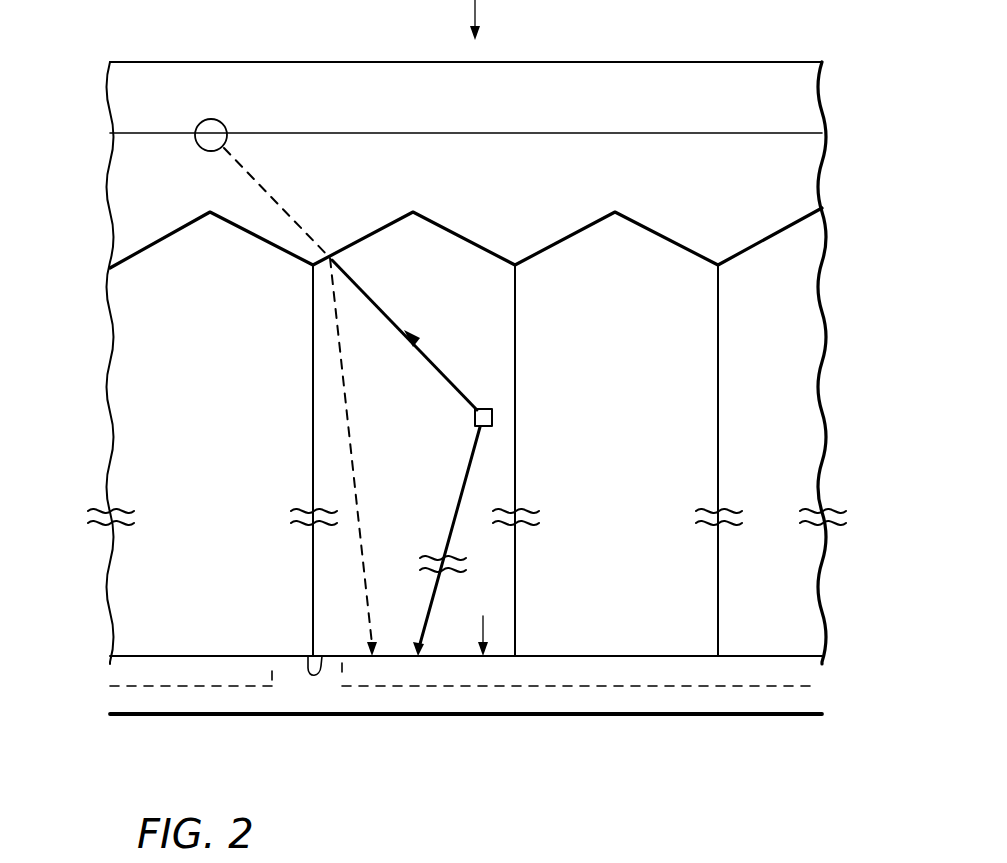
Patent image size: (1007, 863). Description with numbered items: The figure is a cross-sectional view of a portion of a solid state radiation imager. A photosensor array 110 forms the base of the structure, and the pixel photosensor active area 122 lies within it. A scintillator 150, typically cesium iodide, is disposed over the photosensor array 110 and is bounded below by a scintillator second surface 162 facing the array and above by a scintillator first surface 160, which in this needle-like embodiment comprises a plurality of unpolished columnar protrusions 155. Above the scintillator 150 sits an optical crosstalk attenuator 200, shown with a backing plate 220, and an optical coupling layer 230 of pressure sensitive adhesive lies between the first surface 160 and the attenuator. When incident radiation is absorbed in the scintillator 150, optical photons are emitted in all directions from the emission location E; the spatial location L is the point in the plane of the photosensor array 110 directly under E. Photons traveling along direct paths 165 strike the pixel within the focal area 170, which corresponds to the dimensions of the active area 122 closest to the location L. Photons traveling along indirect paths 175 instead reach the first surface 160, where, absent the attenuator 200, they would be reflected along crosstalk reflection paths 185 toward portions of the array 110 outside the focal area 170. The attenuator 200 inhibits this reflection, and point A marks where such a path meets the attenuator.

The photosensor array 110 is at (832, 650).
The pixel photosensor active area 122 is at (464, 672).
The scintillator 150 is at (828, 456).
The columnar protrusions 155 is at (433, 222).
The scintillator first surface 160 is at (162, 236).
The scintillator second surface 162 is at (322, 662).
The direct paths 165 is at (456, 508).
The focal area 170 is at (820, 728).
The indirect paths 175 is at (394, 322).
The crosstalk reflection paths 185 is at (356, 485).
The optical crosstalk attenuator 200 is at (838, 55).
The backing plate 220 is at (109, 107).
The optical coupling layer 230 is at (130, 183).
The point A is at (226, 131).
The emission location E is at (474, 418).
The spatial location L is at (482, 624).